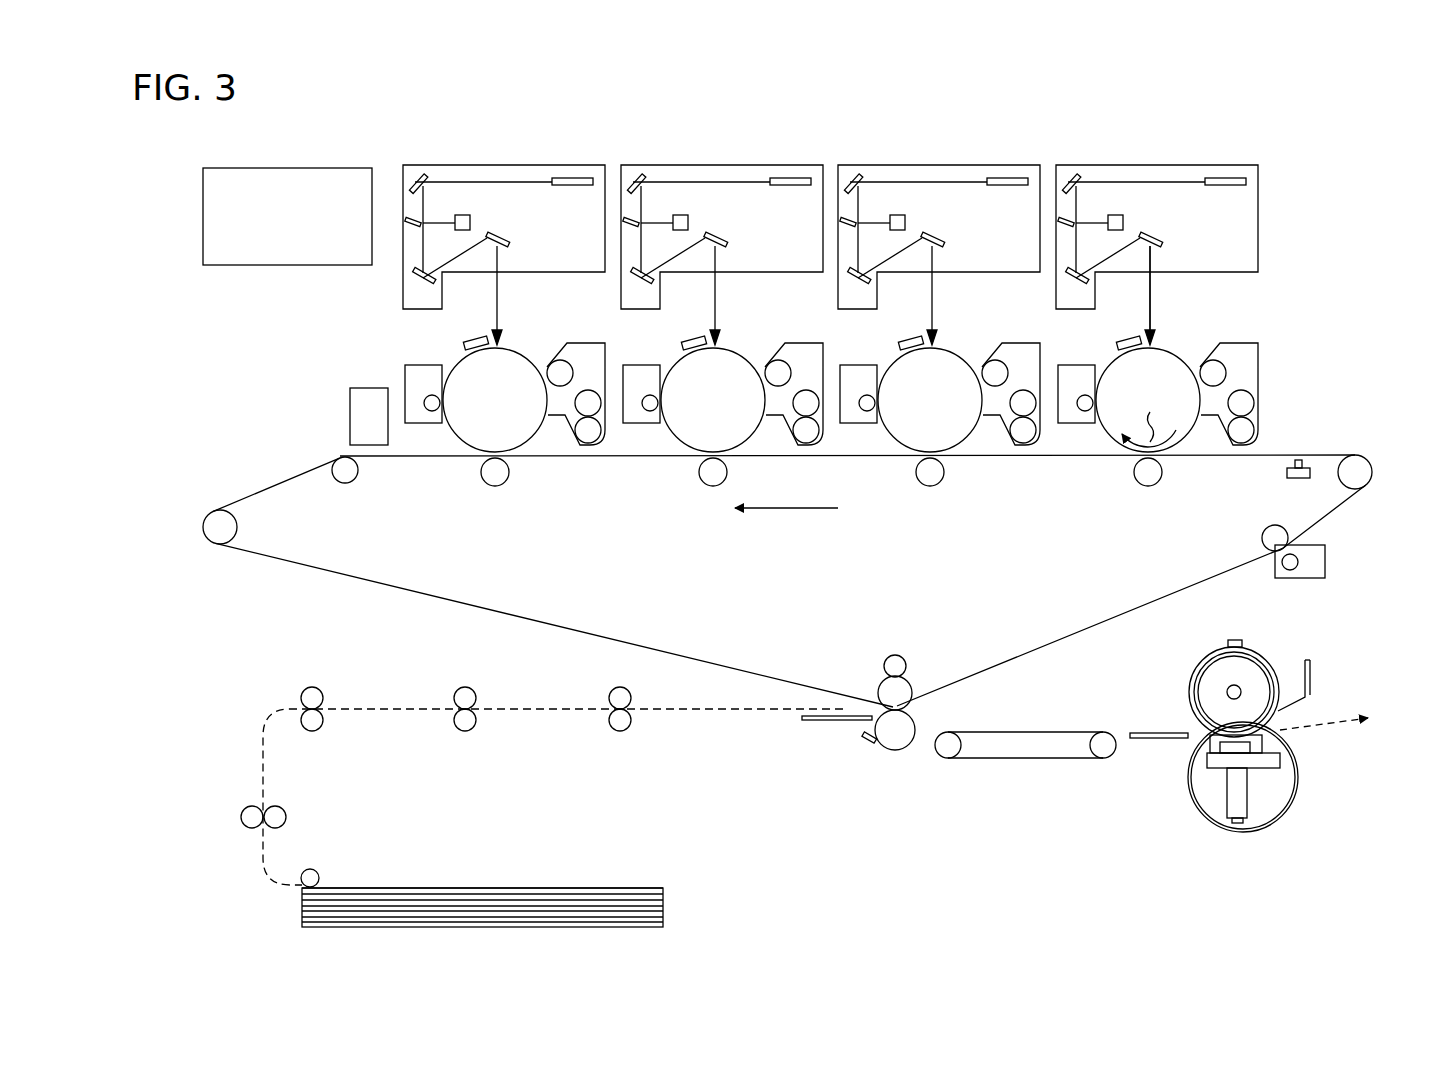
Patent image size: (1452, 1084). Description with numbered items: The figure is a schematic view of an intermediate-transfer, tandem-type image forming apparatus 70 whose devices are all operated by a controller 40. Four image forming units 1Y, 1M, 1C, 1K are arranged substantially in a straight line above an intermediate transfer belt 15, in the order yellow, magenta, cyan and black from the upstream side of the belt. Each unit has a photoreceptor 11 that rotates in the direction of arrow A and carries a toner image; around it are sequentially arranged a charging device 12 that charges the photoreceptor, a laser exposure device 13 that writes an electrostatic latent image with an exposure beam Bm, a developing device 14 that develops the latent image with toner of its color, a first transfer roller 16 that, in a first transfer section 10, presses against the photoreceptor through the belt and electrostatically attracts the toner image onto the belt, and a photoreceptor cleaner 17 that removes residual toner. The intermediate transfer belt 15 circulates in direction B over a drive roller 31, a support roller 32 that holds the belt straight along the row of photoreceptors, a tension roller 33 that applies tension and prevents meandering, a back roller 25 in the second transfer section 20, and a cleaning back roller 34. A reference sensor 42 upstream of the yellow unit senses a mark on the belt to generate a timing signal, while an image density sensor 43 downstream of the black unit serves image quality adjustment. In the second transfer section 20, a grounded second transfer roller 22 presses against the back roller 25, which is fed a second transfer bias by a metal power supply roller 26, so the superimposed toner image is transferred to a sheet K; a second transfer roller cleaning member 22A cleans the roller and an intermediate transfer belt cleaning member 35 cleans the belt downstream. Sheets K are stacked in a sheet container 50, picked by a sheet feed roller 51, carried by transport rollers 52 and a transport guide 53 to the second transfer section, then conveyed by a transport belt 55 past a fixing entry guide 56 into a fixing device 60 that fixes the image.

The black image forming unit 1K is at (509, 150).
The cyan image forming unit 1C is at (715, 150).
The magenta image forming unit 1M is at (932, 150).
The yellow image forming unit 1Y is at (1178, 314).
The first transfer section 10 is at (789, 581).
The photoreceptor 11 is at (1182, 353).
The charging device 12 is at (1118, 340).
The laser exposure device 13 is at (1259, 207).
The developing device 14 is at (1259, 370).
The intermediate transfer belt 15 is at (657, 652).
The first transfer roller 16 is at (1150, 487).
The photoreceptor cleaner 17 is at (1078, 424).
The second transfer section 20 is at (933, 712).
The second transfer roller 22 is at (893, 752).
The second transfer roller cleaning member 22A is at (862, 745).
The back roller 25 is at (912, 683).
The power supply roller 26 is at (884, 660).
The drive roller 31 is at (1362, 470).
The support roller 32 is at (358, 472).
The tension roller 33 is at (238, 523).
The cleaning back roller 34 is at (1265, 532).
The intermediate transfer belt cleaning member 35 is at (1325, 560).
The controller 40 is at (250, 168).
The reference sensor 42 is at (1305, 478).
The image density sensor 43 is at (350, 405).
The sheet container 50 is at (663, 895).
The sheet feed roller 51 is at (318, 870).
The transport rollers 52 is at (246, 812).
The transport guide 53 is at (815, 722).
The transport belt 55 is at (1040, 760).
The fixing entry guide 56 is at (1157, 740).
The fixing device 60 is at (1327, 678).
The image forming apparatus 70 is at (1340, 165).
The rotation direction of photoreceptor A is at (1149, 416).
The circulation direction of intermediate transfer belt B is at (786, 530).
The exposure beam Bm is at (1151, 290).
The sheet K is at (462, 888).